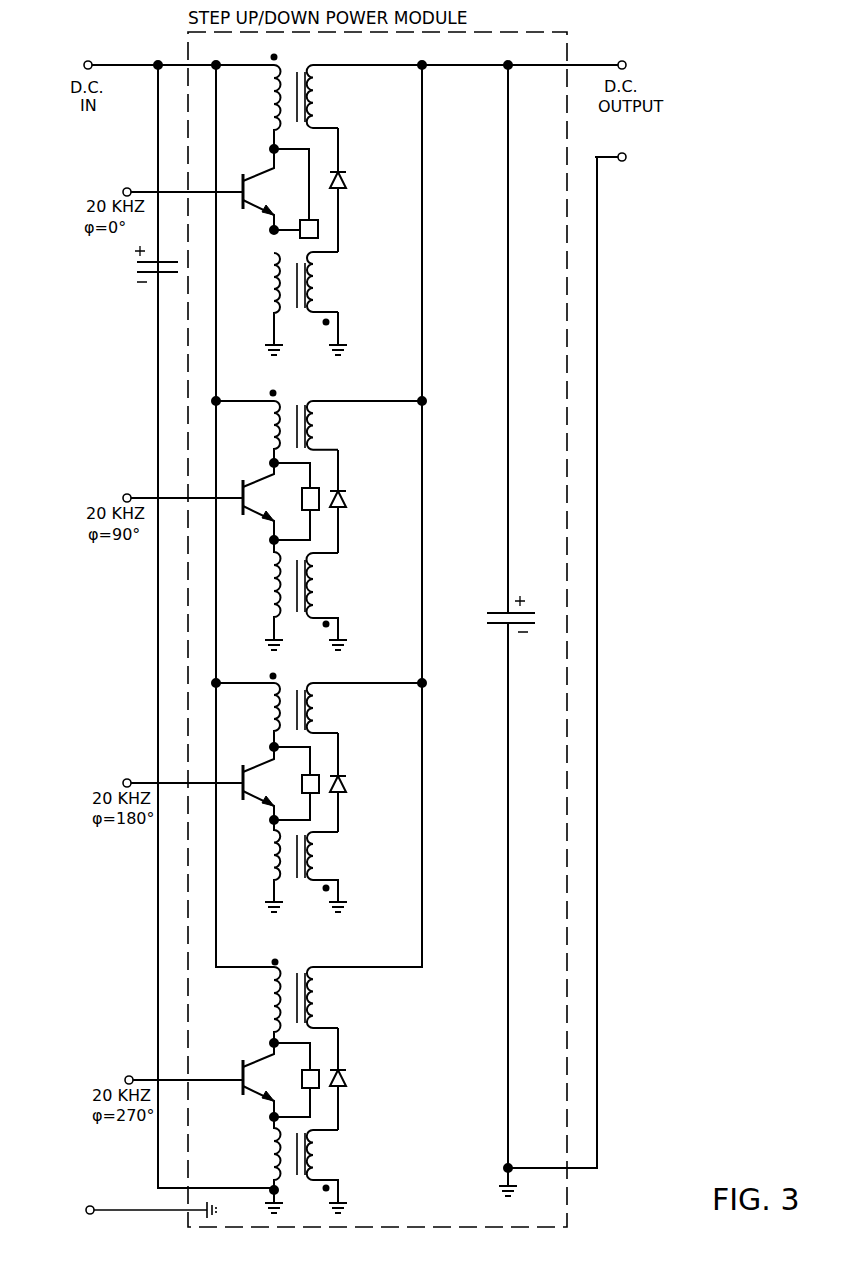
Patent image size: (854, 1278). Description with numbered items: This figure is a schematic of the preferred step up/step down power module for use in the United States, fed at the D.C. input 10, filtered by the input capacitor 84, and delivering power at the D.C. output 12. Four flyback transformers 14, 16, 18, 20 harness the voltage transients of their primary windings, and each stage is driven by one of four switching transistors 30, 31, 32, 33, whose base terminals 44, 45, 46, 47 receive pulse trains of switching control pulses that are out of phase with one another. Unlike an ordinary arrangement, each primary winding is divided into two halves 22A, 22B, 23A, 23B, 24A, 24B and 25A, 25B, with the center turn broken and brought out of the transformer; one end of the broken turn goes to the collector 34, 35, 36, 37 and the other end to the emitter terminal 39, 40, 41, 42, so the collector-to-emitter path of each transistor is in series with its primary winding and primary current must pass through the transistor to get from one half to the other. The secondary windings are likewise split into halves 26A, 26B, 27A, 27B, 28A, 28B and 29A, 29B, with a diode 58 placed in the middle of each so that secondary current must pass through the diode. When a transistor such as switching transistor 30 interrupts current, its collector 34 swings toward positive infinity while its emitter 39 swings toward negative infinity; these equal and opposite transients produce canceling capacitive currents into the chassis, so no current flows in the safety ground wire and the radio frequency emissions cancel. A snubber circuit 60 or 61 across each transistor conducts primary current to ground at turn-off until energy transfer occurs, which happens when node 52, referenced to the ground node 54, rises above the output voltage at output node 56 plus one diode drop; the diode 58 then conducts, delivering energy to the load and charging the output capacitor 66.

The D.C. input 10 is at (114, 128).
The D.C. output terminal 12 is at (634, 69).
The flyback transformer 14 is at (297, 72).
The flyback transformer 16 is at (298, 404).
The flyback transformer 18 is at (299, 690).
The flyback transformer 20 is at (300, 973).
The primary winding half 22A is at (272, 104).
The primary winding half 22B is at (272, 280).
The primary winding half 23A is at (272, 425).
The primary winding half 23B is at (272, 589).
The primary winding half 24A is at (272, 711).
The primary winding half 24B is at (272, 861).
The primary winding half 25A is at (272, 998).
The primary winding half 25B is at (272, 1146).
The secondary winding half 26A is at (322, 102).
The secondary winding half 26B is at (322, 280).
The secondary winding half 27A is at (322, 426).
The secondary winding half 27B is at (322, 587).
The secondary winding half 28A is at (322, 713).
The secondary winding half 28B is at (322, 861).
The secondary winding half 29A is at (322, 997).
The secondary winding half 29B is at (322, 1149).
The switching transistor 30 is at (250, 194).
The switching transistor 31 is at (250, 498).
The switching transistor 32 is at (250, 784).
The switching transistor 33 is at (250, 1080).
The collector 34 is at (266, 176).
The collector 35 is at (270, 474).
The collector 36 is at (266, 762).
The collector 37 is at (266, 1058).
The emitter terminal 39 is at (256, 210).
The emitter terminal 40 is at (256, 522).
The emitter terminal 41 is at (256, 812).
The emitter terminal 42 is at (254, 1098).
The base terminal 44 is at (224, 191).
The base terminal 45 is at (226, 497).
The base terminal 46 is at (232, 784).
The base terminal 47 is at (200, 1079).
The node 52 is at (376, 62).
The ground node 54 is at (340, 330).
The output node 56 is at (580, 64).
The diode 58 is at (348, 181).
The snubber circuit 60 is at (314, 220).
The snubber circuit 61 is at (334, 492).
The output capacitor 66 is at (494, 624).
The input capacitor 84 is at (140, 273).